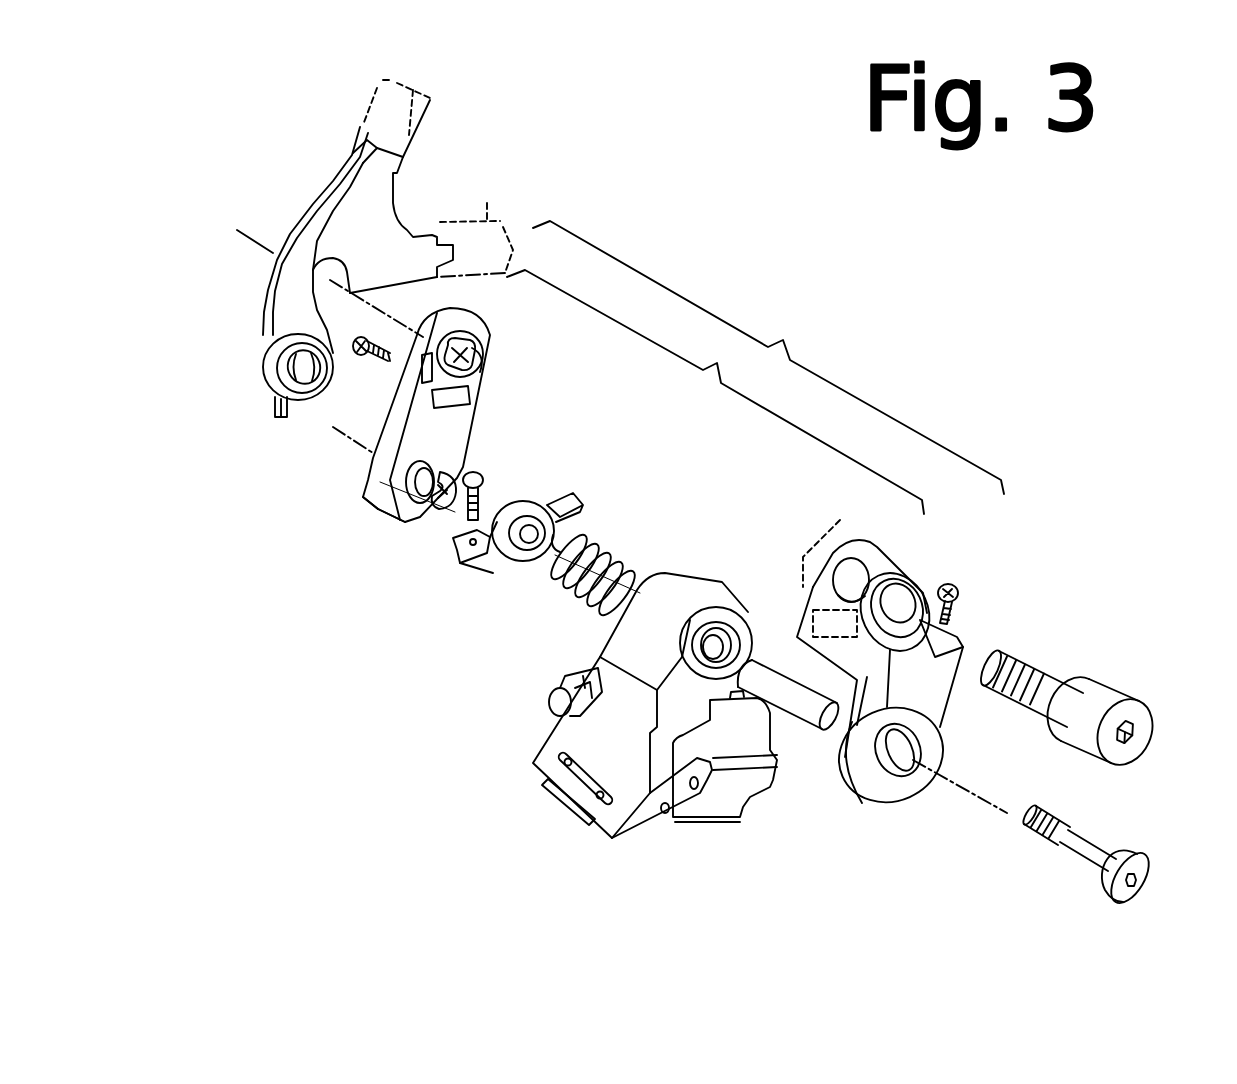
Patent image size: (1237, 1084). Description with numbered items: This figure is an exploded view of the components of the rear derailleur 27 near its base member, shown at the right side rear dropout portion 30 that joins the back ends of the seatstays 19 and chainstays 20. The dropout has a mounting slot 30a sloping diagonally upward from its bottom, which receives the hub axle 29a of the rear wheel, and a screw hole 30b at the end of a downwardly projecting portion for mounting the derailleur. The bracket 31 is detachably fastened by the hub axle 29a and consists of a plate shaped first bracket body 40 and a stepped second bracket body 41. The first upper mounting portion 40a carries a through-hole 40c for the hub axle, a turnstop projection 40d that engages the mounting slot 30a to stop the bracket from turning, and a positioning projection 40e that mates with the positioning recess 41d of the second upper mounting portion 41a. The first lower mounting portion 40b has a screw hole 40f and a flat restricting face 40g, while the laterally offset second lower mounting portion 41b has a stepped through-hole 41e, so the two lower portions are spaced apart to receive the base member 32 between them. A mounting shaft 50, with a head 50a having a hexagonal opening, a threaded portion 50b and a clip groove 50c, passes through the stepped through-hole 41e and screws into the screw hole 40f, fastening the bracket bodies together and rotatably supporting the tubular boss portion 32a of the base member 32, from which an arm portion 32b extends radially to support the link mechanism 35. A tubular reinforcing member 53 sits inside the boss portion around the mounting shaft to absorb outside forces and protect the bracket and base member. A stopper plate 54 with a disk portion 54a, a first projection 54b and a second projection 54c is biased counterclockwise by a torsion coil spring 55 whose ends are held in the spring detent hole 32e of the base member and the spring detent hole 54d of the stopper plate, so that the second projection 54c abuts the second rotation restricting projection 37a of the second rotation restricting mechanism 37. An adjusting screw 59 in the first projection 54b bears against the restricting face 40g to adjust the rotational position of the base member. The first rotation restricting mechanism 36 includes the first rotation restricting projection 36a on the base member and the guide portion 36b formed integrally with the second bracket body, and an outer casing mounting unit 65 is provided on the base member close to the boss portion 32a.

The seatstays 19 is at (363, 123).
The chainstays 20 is at (487, 213).
The rear derailleur 27 is at (768, 357).
The hub axle 29a is at (1118, 690).
The rear dropout portion 30 is at (319, 277).
The mounting slot 30a is at (317, 277).
The screw hole 30b is at (283, 420).
The bracket 31 is at (715, 392).
The base member 32 is at (604, 689).
The tubular boss portion 32a is at (690, 607).
The arm portion 32b is at (622, 807).
The spring detent hole 32e is at (753, 600).
The link mechanism 35 is at (697, 834).
The first rotation restricting mechanism 36 is at (968, 621).
The first rotation restricting projection 36a is at (750, 600).
The guide portion 36b is at (968, 645).
The second rotation restricting mechanism 37 is at (607, 433).
The second rotation restricting projection 37a is at (697, 590).
The first bracket body 40 is at (423, 435).
The first upper mounting portion 40a is at (480, 367).
The first lower mounting portion 40b is at (390, 510).
The through-hole 40c is at (470, 360).
The turnstop projection 40d is at (427, 377).
The positioning projection 40e is at (467, 403).
The screw hole 40f is at (410, 517).
The flat restricting face 40g is at (370, 483).
The second bracket body 41 is at (953, 680).
The second upper mounting portion 41a is at (920, 580).
The second lower mounting portion 41b is at (868, 792).
The positioning recess 41d is at (833, 533).
The stepped through-hole 41e is at (903, 777).
The mounting shaft 50 is at (1098, 838).
The head 50a is at (1137, 853).
The threaded portion 50b is at (1067, 793).
The clip groove 50c is at (1047, 850).
The tubular reinforcing member 53 is at (773, 650).
The stopper plate 54 is at (541, 556).
The disk portion 54a is at (517, 508).
The first projection 54b is at (470, 560).
The second projection 54c is at (573, 498).
The spring detent hole 54d is at (523, 560).
The torsion coil spring 55 is at (603, 557).
The adjusting screw 59 is at (452, 550).
The outer casing mounting unit 65 is at (547, 673).